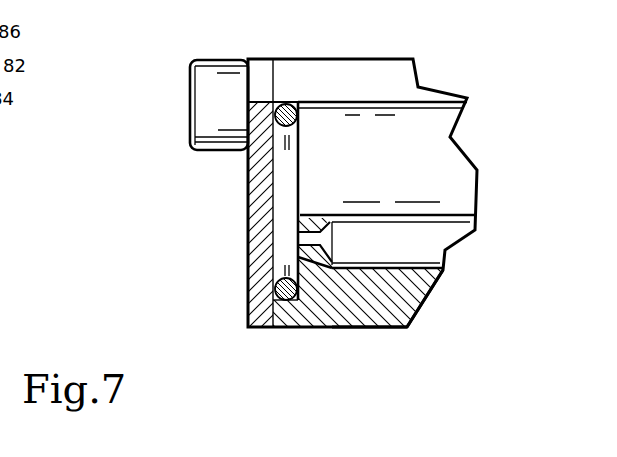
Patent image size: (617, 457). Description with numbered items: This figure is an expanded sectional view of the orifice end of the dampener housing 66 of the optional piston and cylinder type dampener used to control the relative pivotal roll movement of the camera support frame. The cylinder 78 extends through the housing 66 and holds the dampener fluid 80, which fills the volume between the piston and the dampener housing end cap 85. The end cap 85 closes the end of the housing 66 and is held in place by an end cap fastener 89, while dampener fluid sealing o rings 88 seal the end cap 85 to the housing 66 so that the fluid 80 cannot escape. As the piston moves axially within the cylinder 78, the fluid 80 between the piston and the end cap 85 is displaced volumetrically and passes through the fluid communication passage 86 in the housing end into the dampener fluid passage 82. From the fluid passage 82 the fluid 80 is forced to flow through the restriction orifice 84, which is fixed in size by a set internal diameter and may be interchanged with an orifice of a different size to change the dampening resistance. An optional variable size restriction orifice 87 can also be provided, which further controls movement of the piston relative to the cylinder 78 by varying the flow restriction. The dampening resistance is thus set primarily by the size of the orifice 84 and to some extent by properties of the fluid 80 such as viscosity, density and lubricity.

The dampener housing 66 is at (357, 327).
The cylinder 78 is at (320, 130).
The dampener fluid 80 is at (390, 173).
The dampener fluid passage 82 is at (415, 277).
The restriction orifice 84 is at (322, 327).
The dampener housing end cap 85 is at (248, 285).
The fluid communication passage 86 is at (273, 188).
The variable size restriction orifice 87 is at (300, 235).
The dampener fluid sealing o ring 88 is at (287, 327).
The end cap fastener 89 is at (190, 88).